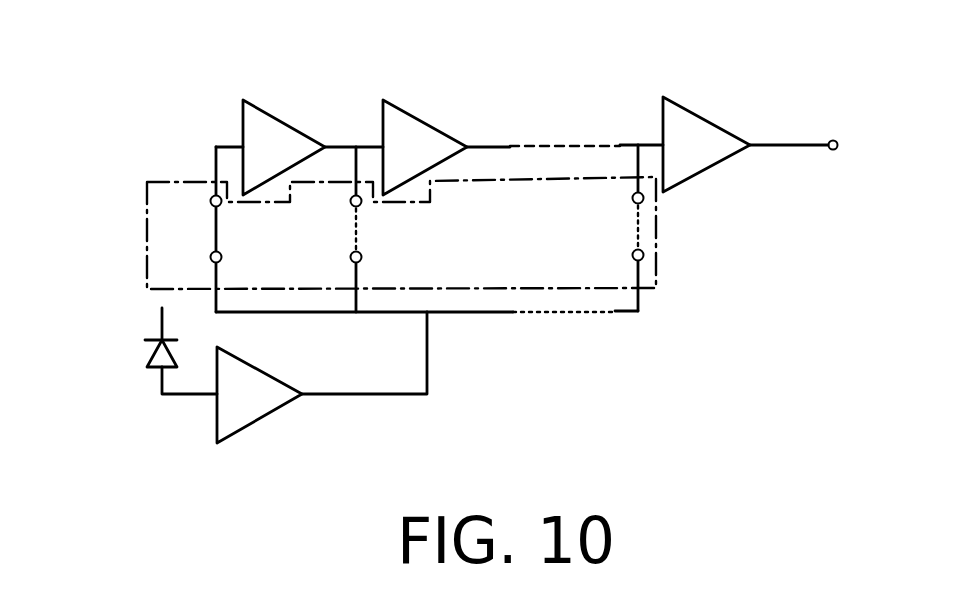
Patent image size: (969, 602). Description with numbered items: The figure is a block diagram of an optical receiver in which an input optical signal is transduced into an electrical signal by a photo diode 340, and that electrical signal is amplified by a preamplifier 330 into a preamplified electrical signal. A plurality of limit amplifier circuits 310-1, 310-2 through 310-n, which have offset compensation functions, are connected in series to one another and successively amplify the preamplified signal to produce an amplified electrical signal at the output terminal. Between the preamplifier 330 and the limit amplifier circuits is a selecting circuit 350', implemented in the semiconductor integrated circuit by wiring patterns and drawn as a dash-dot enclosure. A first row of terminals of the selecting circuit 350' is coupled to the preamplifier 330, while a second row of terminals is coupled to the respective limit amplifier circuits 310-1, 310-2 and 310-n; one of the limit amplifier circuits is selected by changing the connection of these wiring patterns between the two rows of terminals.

The limit amplifier circuit 310-1 is at (267, 112).
The limit amplifier circuit 310-2 is at (410, 114).
The limit amplifier circuit 310-n is at (685, 108).
The preamplifier 330 is at (257, 421).
The photo diode 340 is at (148, 351).
The selecting circuit 350' is at (470, 228).